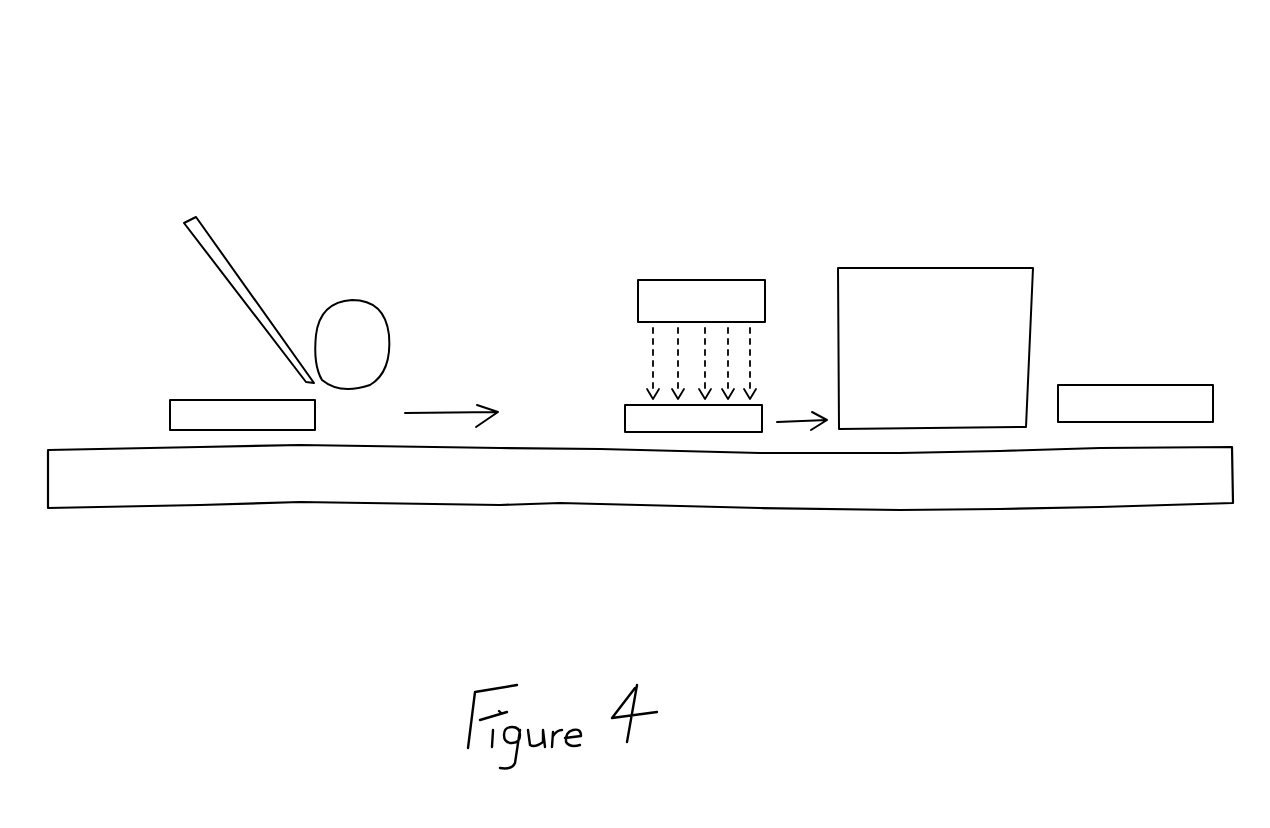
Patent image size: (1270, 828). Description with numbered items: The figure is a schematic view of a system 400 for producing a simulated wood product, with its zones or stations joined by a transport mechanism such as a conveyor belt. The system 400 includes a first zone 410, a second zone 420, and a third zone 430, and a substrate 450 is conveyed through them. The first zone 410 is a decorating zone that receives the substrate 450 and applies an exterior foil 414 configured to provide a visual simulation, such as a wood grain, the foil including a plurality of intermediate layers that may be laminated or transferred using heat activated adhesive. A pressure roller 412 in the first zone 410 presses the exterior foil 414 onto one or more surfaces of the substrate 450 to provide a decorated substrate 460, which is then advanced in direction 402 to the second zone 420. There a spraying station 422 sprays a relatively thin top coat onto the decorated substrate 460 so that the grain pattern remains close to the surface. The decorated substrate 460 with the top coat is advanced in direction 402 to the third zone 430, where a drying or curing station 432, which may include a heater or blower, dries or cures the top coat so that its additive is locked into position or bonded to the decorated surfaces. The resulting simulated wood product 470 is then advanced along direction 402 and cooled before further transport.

The system 400 is at (644, 288).
The direction 402 is at (616, 396).
The first zone 410 is at (291, 239).
The pressure roller 412 is at (386, 323).
The exterior foil 414 is at (256, 300).
The second zone 420 is at (710, 243).
The spraying station 422 is at (701, 316).
The third zone 430 is at (937, 251).
The drying or curing station 432 is at (935, 348).
The substrate 450 is at (219, 395).
The decorated substrate 460 is at (640, 485).
The simulated wood product 470 is at (1149, 377).